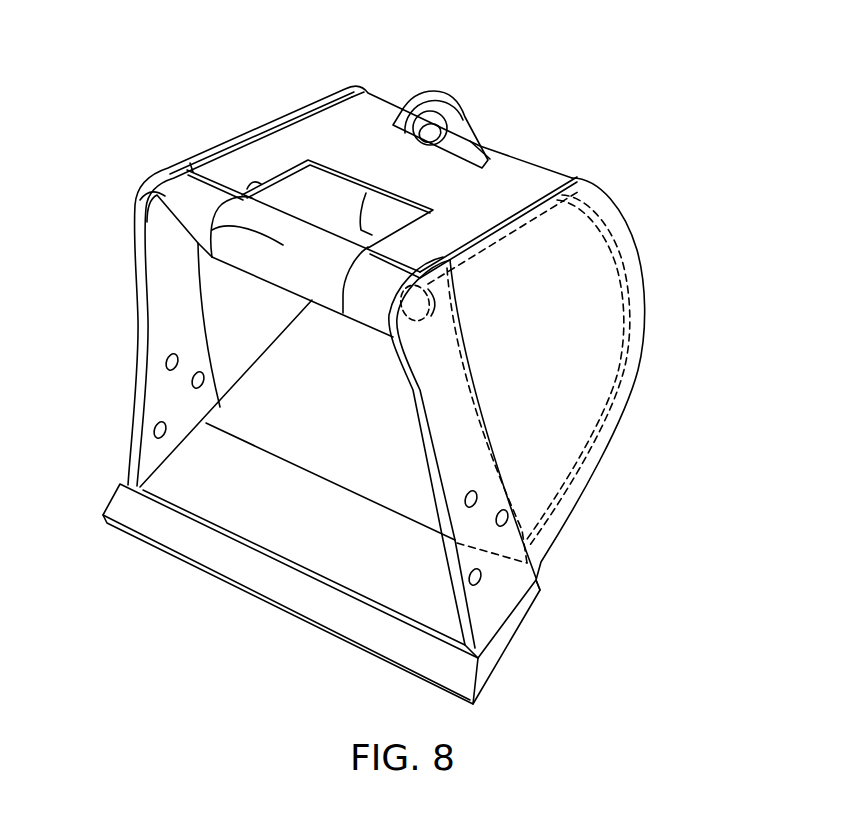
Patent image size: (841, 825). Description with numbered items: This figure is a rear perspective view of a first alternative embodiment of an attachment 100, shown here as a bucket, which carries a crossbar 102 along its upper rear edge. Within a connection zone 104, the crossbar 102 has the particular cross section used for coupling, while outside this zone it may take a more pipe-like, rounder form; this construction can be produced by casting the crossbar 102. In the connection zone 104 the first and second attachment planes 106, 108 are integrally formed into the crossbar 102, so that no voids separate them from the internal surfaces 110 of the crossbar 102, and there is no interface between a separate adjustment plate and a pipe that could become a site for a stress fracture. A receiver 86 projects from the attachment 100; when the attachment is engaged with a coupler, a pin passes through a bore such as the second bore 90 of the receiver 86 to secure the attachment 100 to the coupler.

The attachment 100 is at (616, 105).
The receiver 86 is at (463, 147).
The second bore 90 is at (430, 133).
The crossbar 102 is at (140, 205).
The connection zone 104 is at (266, 182).
The first attachment plane 106 is at (198, 243).
The second attachment plane 108 is at (277, 284).
The internal surfaces 110 is at (415, 302).